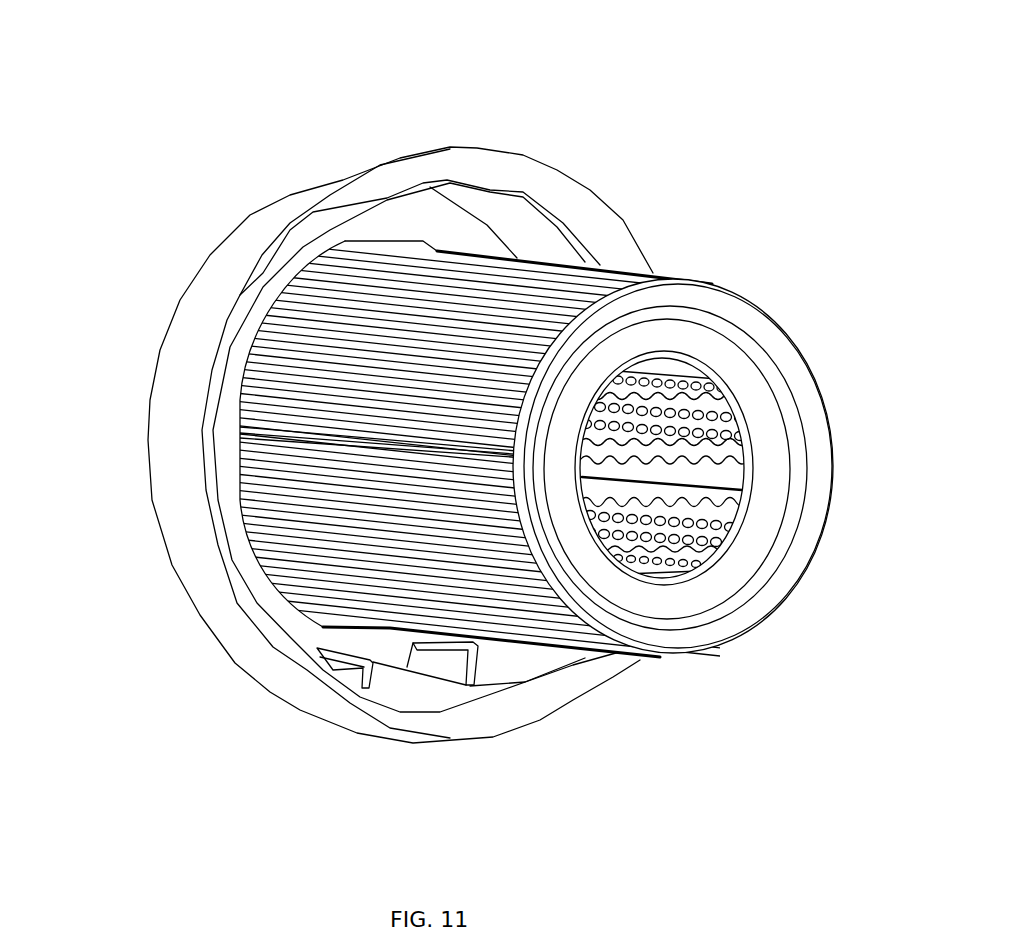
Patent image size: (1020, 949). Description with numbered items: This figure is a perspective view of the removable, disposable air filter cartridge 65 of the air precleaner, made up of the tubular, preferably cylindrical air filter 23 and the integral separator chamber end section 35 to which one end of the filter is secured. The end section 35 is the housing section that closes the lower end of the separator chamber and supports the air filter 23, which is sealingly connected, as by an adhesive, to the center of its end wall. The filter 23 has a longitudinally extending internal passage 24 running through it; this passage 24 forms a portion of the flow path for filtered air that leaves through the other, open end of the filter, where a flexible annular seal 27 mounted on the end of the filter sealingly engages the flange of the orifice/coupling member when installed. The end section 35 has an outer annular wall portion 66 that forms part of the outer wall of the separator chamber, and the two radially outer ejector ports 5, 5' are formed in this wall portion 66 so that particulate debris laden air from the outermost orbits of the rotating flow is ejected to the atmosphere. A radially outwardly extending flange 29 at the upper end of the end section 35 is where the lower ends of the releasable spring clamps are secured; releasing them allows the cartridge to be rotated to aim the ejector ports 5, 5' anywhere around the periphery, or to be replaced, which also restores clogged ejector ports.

The filter assembly 65 is at (475, 434).
The separator chamber end section 35 is at (308, 185).
The outer annular wall portion 66 is at (187, 495).
The radially outwardly extending flange 29 is at (248, 602).
The air filter 23 is at (590, 266).
The ejector port 5' is at (328, 738).
The ejector port 5 is at (442, 747).
The flexible annular seal 27 is at (673, 633).
The internal passage 24 is at (727, 488).